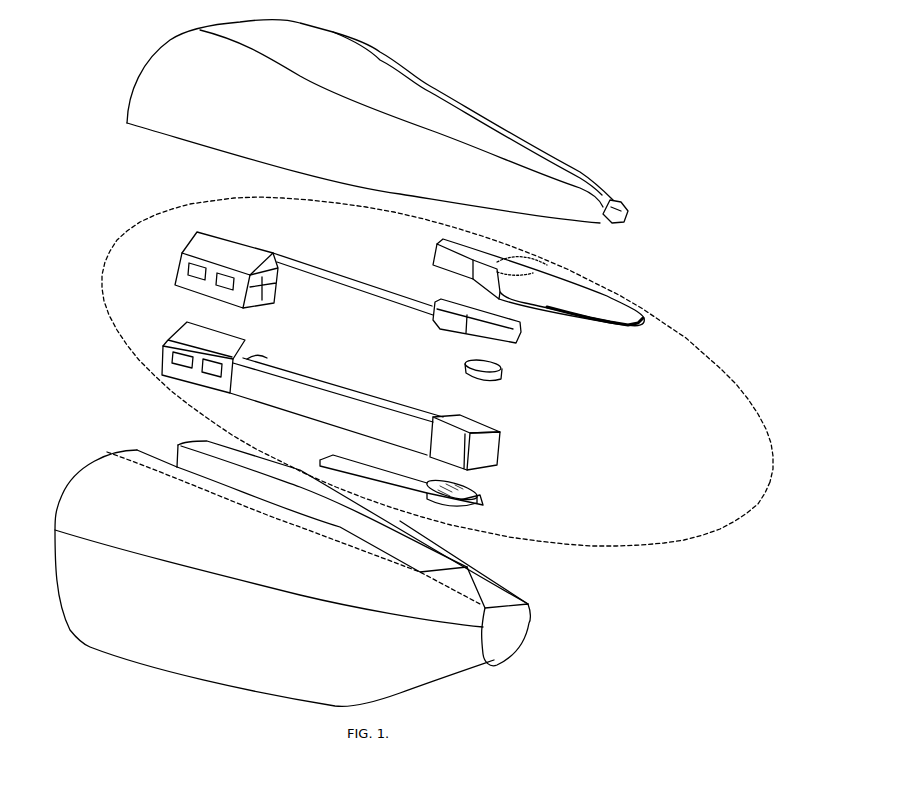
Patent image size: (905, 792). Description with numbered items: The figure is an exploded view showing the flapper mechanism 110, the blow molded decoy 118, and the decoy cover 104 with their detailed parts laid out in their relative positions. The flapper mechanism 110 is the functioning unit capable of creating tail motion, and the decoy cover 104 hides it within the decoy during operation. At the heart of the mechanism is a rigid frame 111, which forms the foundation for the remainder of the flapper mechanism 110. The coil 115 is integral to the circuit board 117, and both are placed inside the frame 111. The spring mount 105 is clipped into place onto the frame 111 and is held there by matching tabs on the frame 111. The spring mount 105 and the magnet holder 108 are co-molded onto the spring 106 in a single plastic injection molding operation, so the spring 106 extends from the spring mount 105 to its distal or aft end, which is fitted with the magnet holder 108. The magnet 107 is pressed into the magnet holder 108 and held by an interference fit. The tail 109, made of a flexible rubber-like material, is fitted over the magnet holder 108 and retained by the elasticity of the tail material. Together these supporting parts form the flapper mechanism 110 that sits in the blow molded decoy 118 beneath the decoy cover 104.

The decoy cover 104 is at (581, 171).
The spring mount 105 is at (187, 243).
The spring 106 is at (310, 262).
The magnet 107 is at (502, 380).
The magnet holder 108 is at (513, 345).
The tail 109 is at (622, 329).
The flapper mechanism 110 is at (727, 368).
The frame 111 is at (503, 452).
The coil 115 is at (480, 493).
The circuit board 117 is at (485, 507).
The blow molded decoy 118 is at (530, 627).